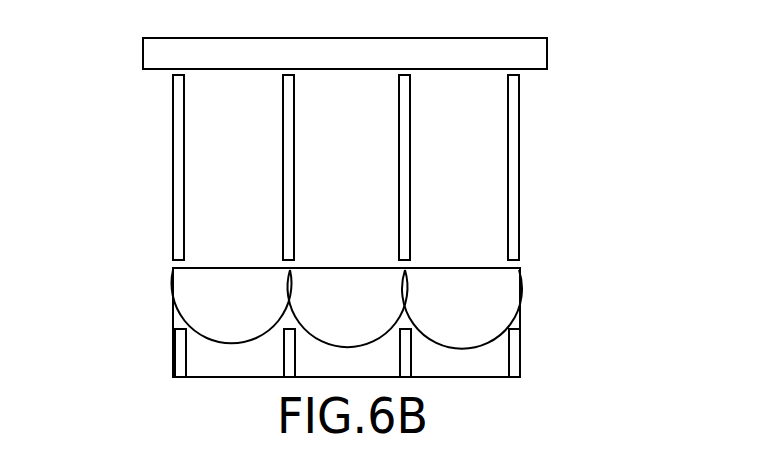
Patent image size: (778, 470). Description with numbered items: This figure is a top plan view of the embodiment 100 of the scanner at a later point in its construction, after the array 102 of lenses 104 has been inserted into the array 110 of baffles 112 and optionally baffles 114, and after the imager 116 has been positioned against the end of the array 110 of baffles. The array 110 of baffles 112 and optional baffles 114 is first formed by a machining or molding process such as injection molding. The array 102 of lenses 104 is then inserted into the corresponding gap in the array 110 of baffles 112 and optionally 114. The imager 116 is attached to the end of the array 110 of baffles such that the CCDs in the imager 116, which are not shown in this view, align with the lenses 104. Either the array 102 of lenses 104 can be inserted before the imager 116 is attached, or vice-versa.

The embodiment of the scanner 100 is at (92, 131).
The array of lenses 102 is at (100, 274).
The lenses 104 is at (188, 302).
The array of baffles 110 is at (367, 167).
The baffles 112 is at (302, 167).
The baffles 114 is at (284, 348).
The imager 116 is at (549, 47).